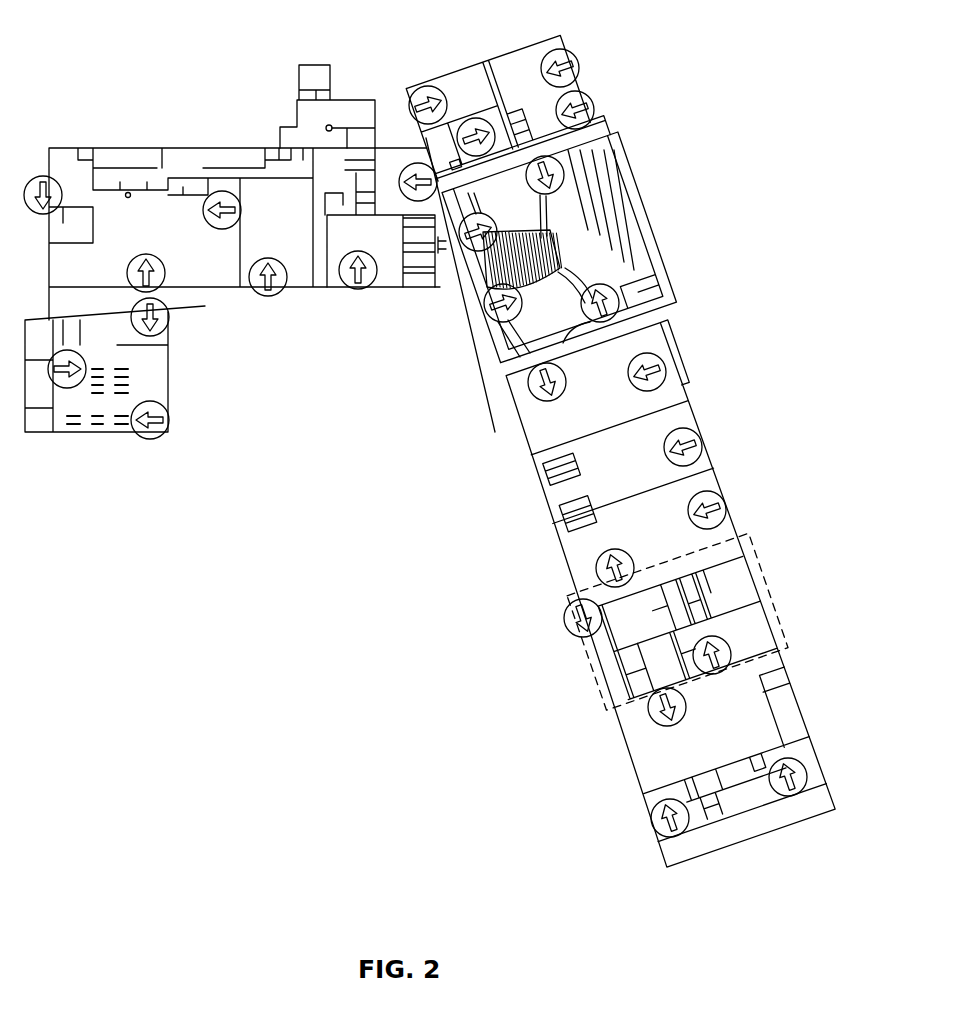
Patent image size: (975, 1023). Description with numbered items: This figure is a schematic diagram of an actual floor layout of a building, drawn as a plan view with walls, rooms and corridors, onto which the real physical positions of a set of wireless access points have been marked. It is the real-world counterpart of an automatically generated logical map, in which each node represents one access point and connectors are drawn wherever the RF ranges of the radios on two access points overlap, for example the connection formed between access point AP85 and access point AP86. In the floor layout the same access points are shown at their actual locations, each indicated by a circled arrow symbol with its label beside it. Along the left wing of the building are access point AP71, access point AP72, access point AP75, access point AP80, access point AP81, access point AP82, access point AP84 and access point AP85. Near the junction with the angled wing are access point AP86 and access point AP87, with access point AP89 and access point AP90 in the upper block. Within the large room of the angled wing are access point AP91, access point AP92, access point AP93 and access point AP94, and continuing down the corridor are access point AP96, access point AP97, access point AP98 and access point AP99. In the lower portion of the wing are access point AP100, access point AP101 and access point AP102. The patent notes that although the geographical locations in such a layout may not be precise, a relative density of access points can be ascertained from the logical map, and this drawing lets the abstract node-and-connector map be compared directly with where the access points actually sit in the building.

The access point AP71 is at (173, 414).
The access point AP72 is at (75, 379).
The access point AP75 is at (173, 322).
The access point AP80 is at (139, 265).
The access point AP81 is at (214, 223).
The access point AP82 is at (269, 266).
The access point AP84 is at (410, 168).
The access point AP85 is at (361, 260).
The access point AP86 is at (484, 146).
The access point AP87 is at (414, 93).
The access point AP89 is at (584, 68).
The access point AP90 is at (601, 110).
The access point AP91 is at (495, 223).
The access point AP92 is at (559, 185).
The access point AP93 is at (525, 305).
The access point AP94 is at (621, 328).
The access point AP96 is at (553, 395).
The access point AP97 is at (657, 447).
The access point AP98 is at (682, 510).
The access point AP99 is at (614, 560).
The access point AP100 is at (562, 625).
The access point AP101 is at (738, 742).
The access point AP102 is at (722, 646).